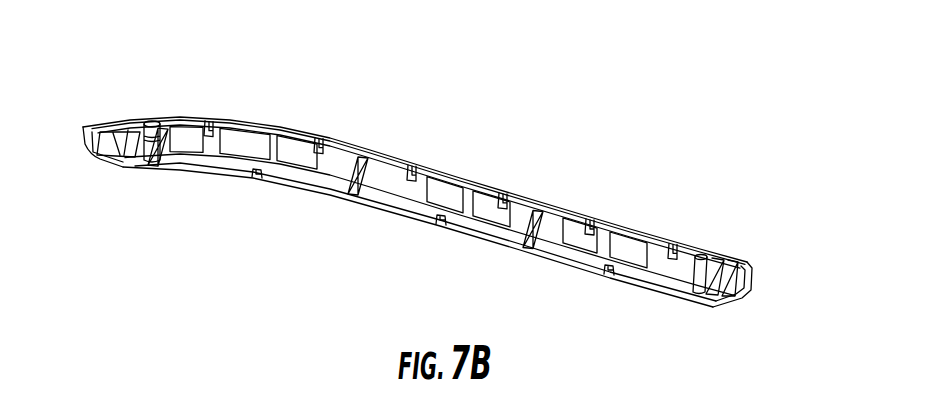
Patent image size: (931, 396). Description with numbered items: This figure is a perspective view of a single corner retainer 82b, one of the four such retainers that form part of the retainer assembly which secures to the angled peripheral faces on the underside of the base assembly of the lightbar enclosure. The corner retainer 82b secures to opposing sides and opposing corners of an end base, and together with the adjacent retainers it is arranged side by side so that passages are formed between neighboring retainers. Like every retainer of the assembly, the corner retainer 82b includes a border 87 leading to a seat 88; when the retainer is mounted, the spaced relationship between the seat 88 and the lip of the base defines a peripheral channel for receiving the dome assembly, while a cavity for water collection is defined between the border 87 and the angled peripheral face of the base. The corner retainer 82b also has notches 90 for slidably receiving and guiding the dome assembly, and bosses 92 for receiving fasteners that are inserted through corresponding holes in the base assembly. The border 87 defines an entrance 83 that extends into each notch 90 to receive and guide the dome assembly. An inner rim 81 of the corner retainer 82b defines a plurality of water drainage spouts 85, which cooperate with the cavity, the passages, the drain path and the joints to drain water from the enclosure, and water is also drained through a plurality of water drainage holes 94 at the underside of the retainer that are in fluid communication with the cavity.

The inner rim 81 is at (267, 127).
The corner retainer 82b is at (853, 193).
The entrance 83 is at (592, 217).
The water drainage spout 85 is at (208, 124).
The border 87 is at (752, 274).
The seat 88 is at (503, 190).
The notch 90 is at (738, 252).
The boss 92 is at (149, 122).
The water drainage hole 94 is at (257, 179).